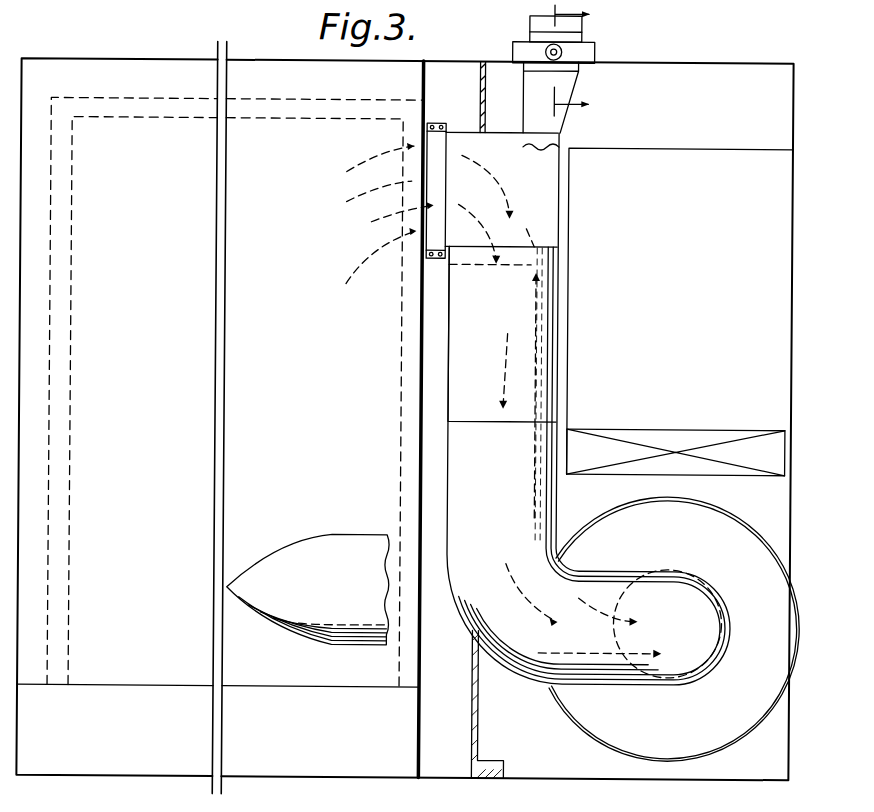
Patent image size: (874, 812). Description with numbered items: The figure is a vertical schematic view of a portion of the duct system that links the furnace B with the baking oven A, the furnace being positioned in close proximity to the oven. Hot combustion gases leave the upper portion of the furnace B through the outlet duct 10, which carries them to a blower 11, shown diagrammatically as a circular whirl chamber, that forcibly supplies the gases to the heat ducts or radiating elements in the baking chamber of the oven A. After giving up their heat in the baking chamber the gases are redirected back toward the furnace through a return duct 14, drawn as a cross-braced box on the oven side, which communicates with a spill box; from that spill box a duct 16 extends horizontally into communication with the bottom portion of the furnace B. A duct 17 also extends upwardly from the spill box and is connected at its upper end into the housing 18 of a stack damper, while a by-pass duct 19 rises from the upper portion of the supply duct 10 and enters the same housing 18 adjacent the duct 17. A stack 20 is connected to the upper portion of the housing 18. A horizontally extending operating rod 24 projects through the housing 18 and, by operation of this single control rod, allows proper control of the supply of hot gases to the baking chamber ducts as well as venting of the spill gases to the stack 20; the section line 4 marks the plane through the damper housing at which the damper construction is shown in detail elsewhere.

The section line 4— 4 is at (561, 58).
The outlet duct 10 is at (548, 213).
The blower 11 is at (593, 724).
The return duct 14 is at (636, 430).
The duct 16 is at (343, 539).
The duct 17 is at (560, 144).
The housing of stack damper 18 is at (594, 50).
The by-pass duct 19 is at (530, 90).
The stack 20 is at (527, 21).
The operating rod 24 is at (542, 51).
The baking oven A is at (659, 166).
The furnace B is at (407, 642).